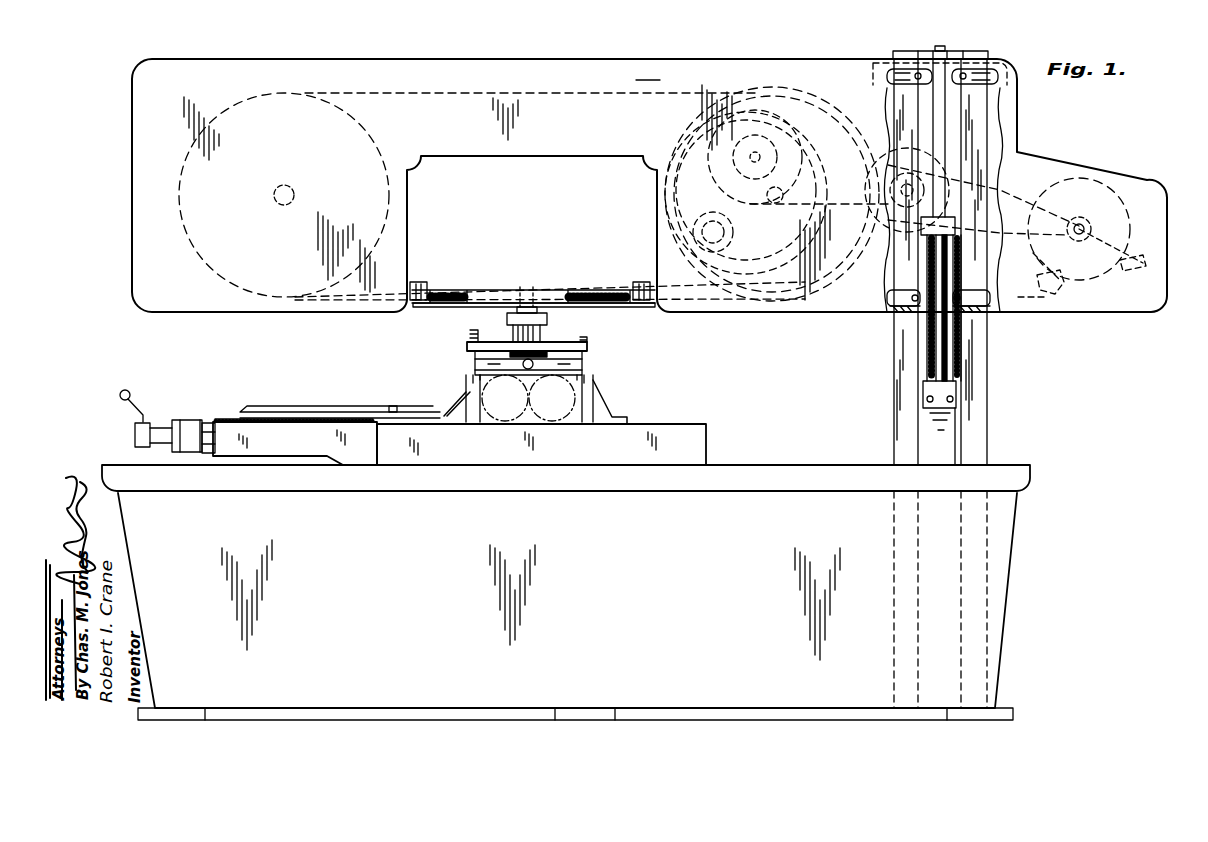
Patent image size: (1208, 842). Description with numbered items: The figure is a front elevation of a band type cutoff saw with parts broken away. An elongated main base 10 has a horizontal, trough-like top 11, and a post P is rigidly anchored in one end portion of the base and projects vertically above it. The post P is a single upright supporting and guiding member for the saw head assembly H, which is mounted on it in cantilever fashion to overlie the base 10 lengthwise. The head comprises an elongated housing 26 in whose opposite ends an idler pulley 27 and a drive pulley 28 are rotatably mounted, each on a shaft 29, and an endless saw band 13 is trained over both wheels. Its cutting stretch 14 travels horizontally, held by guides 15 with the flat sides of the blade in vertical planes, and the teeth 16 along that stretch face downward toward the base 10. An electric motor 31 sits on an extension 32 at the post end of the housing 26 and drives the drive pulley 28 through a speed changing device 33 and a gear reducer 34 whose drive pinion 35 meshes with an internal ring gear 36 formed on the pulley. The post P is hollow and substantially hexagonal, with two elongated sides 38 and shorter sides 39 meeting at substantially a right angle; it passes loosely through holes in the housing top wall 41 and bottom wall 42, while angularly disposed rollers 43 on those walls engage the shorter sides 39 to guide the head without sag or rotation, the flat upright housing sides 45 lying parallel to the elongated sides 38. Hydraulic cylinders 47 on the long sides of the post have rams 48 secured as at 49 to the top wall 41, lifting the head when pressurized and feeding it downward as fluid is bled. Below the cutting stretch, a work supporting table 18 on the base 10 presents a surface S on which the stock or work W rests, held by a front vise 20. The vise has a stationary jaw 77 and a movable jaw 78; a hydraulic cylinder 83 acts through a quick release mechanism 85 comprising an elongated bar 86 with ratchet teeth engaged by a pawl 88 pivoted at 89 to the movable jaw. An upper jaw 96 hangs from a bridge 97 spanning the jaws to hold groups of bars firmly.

The main base 10 is at (1036, 567).
The trough-like top 11 is at (814, 464).
The endless saw band 13 is at (436, 93).
The cutting stretch 14 is at (504, 286).
The guides 15 is at (418, 280).
The teeth 16 is at (483, 310).
The work supporting table 18 is at (704, 440).
The front vise 20 is at (549, 355).
The housing 26 is at (543, 155).
The idler pulley 27 is at (378, 148).
The drive pulley 28 is at (842, 121).
The shaft 29 is at (290, 188).
The electric motor 31 is at (1097, 180).
The extension 32 is at (1130, 298).
The speed changing device 33 is at (860, 165).
The gear reducer 34 is at (778, 93).
The drive pinion 35 is at (724, 232).
The internal ring gear 36 is at (762, 266).
The elongated sides of post 38 is at (955, 433).
The shorter sides of post 39 is at (895, 383).
The top wall of housing 41 is at (758, 59).
The bottom wall of housing 42 is at (780, 310).
The rollers 43 is at (985, 72).
The upright sides of housing 45 is at (636, 80).
The hydraulic cylinders 47 is at (923, 347).
The rams 48 is at (940, 135).
The ram securement 49 is at (944, 46).
The stationary jaw 77 is at (585, 380).
The movable jaw 78 is at (468, 354).
The hydraulic cylinder 83 is at (190, 426).
The quick release mechanism 85 is at (276, 398).
The elongated bar 86 is at (234, 420).
The pawl 88 is at (328, 418).
The pivotal connection 89 is at (392, 405).
The upper jaw 96 is at (582, 362).
The bridge 97 is at (557, 343).
The saw head assembly H is at (576, 70).
The post P is at (985, 380).
The work supporting surface S is at (688, 424).
The work W is at (490, 393).